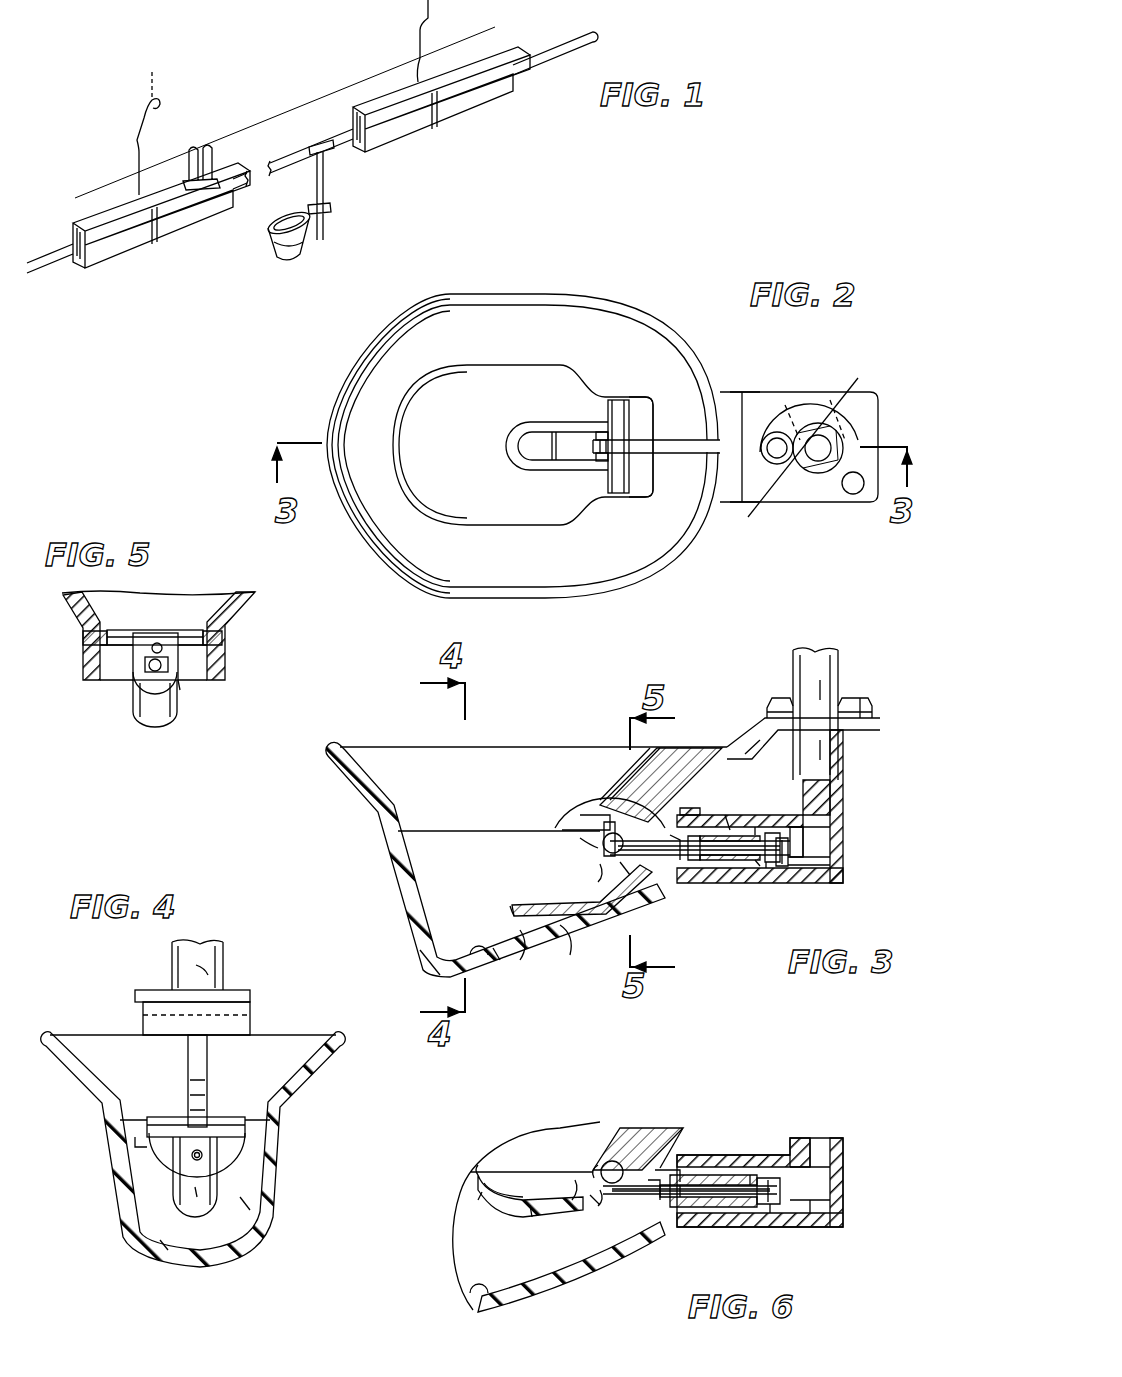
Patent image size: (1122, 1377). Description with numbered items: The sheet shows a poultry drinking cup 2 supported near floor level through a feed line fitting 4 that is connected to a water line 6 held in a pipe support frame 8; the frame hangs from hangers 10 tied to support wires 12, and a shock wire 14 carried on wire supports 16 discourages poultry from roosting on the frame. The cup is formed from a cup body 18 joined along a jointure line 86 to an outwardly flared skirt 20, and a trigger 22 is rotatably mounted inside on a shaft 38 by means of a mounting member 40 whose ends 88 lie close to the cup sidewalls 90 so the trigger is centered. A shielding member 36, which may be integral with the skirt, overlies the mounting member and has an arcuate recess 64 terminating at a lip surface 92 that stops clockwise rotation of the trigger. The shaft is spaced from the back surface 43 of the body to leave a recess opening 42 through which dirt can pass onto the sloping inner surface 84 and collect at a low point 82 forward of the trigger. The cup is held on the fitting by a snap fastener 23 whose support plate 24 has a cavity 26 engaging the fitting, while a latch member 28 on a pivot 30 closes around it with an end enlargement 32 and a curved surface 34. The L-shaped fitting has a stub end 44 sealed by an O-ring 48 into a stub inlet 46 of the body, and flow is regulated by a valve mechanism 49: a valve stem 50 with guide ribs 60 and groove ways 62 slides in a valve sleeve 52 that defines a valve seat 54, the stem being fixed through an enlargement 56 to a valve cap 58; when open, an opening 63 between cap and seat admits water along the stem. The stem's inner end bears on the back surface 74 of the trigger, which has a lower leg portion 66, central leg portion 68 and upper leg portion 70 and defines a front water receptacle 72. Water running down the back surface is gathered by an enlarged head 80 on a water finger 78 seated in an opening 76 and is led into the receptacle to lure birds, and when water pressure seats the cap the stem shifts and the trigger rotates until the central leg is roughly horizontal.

In FIG. 1, the poultry drinking cup 2 is at (271, 246).
In FIG. 2, the poultry drinking cup 2 is at (582, 294).
In FIG. 3, the poultry drinking cup 2 is at (505, 745).
In FIG. 4, the poultry drinking cup 2 is at (90, 1028).
In FIG. 1, the feed line fitting 4 is at (327, 182).
In FIG. 2, the feed line fitting 4 is at (800, 470).
In FIG. 3, the feed line fitting 4 is at (792, 660).
In FIG. 4, the feed line fitting 4 is at (225, 953).
In FIG. 6, the feed line fitting 4 is at (833, 1145).
In FIG. 1, the water line 6 is at (536, 48).
In FIG. 1, the pipe support frame 8 is at (458, 112).
In FIG. 1, the hangers 10 is at (151, 131).
In FIG. 1, the support wires 12 is at (156, 82).
In FIG. 1, the shock wire 14 is at (363, 84).
In FIG. 1, the wire supports 16 is at (262, 126).
In FIG. 2, the cup body 18 is at (474, 418).
In FIG. 4, the cup body 18 is at (278, 1187).
In FIG. 5, the cup body 18 is at (95, 667).
In FIG. 2, the skirt 20 is at (392, 548).
In FIG. 3, the skirt 20 is at (363, 790).
In FIG. 4, the skirt 20 is at (298, 1075).
In FIG. 5, the skirt 20 is at (248, 600).
In FIG. 2, the trigger 22 is at (505, 452).
In FIG. 3, the trigger 22 is at (506, 915).
In FIG. 4, the trigger 22 is at (168, 1194).
In FIG. 5, the trigger 22 is at (142, 738).
In FIG. 6, the trigger 22 is at (495, 1220).
In FIG. 2, the snap fastener 23 is at (876, 416).
In FIG. 4, the snap fastener 23 is at (250, 975).
In FIG. 2, the support plate 24 is at (812, 502).
In FIG. 3, the support plate 24 is at (848, 731).
In FIG. 2, the cavity 26 is at (790, 461).
In FIG. 2, the latch member 28 is at (812, 398).
In FIG. 3, the latch member 28 is at (858, 706).
In FIG. 2, the pivot 30 is at (853, 495).
In FIG. 3, the pivot 30 is at (855, 700).
In FIG. 2, the end enlargement 32 is at (777, 430).
In FIG. 3, the end enlargement 32 is at (775, 702).
In FIG. 2, the curved surface 34 is at (843, 398).
In FIG. 2, the shielding member 36 is at (640, 446).
In FIG. 3, the shielding member 36 is at (695, 760).
In FIG. 4, the shielding member 36 is at (208, 1060).
In FIG. 6, the shielding member 36 is at (615, 1126).
In FIG. 2, the shaft 38 is at (616, 395).
In FIG. 3, the shaft 38 is at (604, 840).
In FIG. 4, the shaft 38 is at (104, 1147).
In FIG. 5, the shaft 38 is at (95, 630).
In FIG. 6, the shaft 38 is at (652, 1155).
In FIG. 2, the mounting member 40 is at (600, 478).
In FIG. 3, the mounting member 40 is at (590, 822).
In FIG. 4, the mounting member 40 is at (164, 1118).
In FIG. 5, the mounting member 40 is at (112, 627).
In FIG. 6, the mounting member 40 is at (668, 1168).
In FIG. 2, the recess opening 42 is at (640, 487).
In FIG. 2, the back surface 43 is at (650, 480).
In FIG. 3, the stub end 44 is at (770, 884).
In FIG. 6, the stub end 44 is at (825, 1228).
In FIG. 3, the stub inlet 46 is at (708, 815).
In FIG. 6, the stub inlet 46 is at (672, 1225).
In FIG. 3, the O-ring 48 is at (736, 815).
In FIG. 6, the O-ring 48 is at (727, 1175).
In FIG. 3, the valve mechanism 49 is at (694, 884).
In FIG. 6, the valve mechanism 49 is at (705, 1216).
In FIG. 3, the valve stem 50 is at (672, 880).
In FIG. 5, the valve stem 50 is at (154, 646).
In FIG. 6, the valve stem 50 is at (642, 1195).
In FIG. 3, the valve sleeve 52 is at (724, 862).
In FIG. 6, the valve sleeve 52 is at (736, 1208).
In FIG. 3, the valve seat 54 is at (760, 828).
In FIG. 6, the valve seat 54 is at (752, 1174).
In FIG. 3, the enlargement 56 is at (820, 826).
In FIG. 6, the enlargement 56 is at (775, 1210).
In FIG. 3, the valve cap 58 is at (790, 850).
In FIG. 6, the valve cap 58 is at (790, 1190).
In FIG. 3, the guide ribs 60 is at (766, 884).
In FIG. 3, the groove ways 62 is at (748, 884).
In FIG. 3, the opening 63 is at (772, 834).
In FIG. 3, the recess 64 is at (612, 832).
In FIG. 6, the recess 64 is at (613, 1160).
In FIG. 3, the lower leg portion 66 is at (520, 958).
In FIG. 6, the lower leg portion 66 is at (490, 1205).
In FIG. 3, the central leg portion 68 is at (565, 960).
In FIG. 6, the central leg portion 68 is at (532, 1217).
In FIG. 3, the upper leg portion 70 is at (575, 840).
In FIG. 3, the water receptacle 72 is at (532, 905).
In FIG. 4, the water receptacle 72 is at (195, 1188).
In FIG. 6, the water receptacle 72 is at (480, 1176).
In FIG. 3, the back surface 74 is at (655, 768).
In FIG. 5, the back surface 74 is at (168, 648).
In FIG. 6, the back surface 74 is at (590, 1205).
In FIG. 3, the opening 76 is at (600, 872).
In FIG. 4, the opening 76 is at (180, 1140).
In FIG. 5, the opening 76 is at (145, 663).
In FIG. 6, the opening 76 is at (606, 1200).
In FIG. 3, the water finger 78 is at (595, 940).
In FIG. 4, the water finger 78 is at (205, 1155).
In FIG. 6, the water finger 78 is at (580, 1190).
In FIG. 3, the enlarged head 80 is at (626, 862).
In FIG. 5, the enlarged head 80 is at (178, 682).
In FIG. 3, the low point 82 is at (430, 970).
In FIG. 4, the low point 82 is at (167, 1237).
In FIG. 3, the inner surface 84 is at (482, 968).
In FIG. 4, the inner surface 84 is at (240, 1197).
In FIG. 6, the inner surface 84 is at (486, 1290).
In FIG. 3, the jointure line 86 is at (424, 832).
In FIG. 5, the ends 88 is at (215, 630).
In FIG. 5, the cup sidewalls 90 is at (132, 667).
In FIG. 6, the lip surface 92 is at (585, 1165).